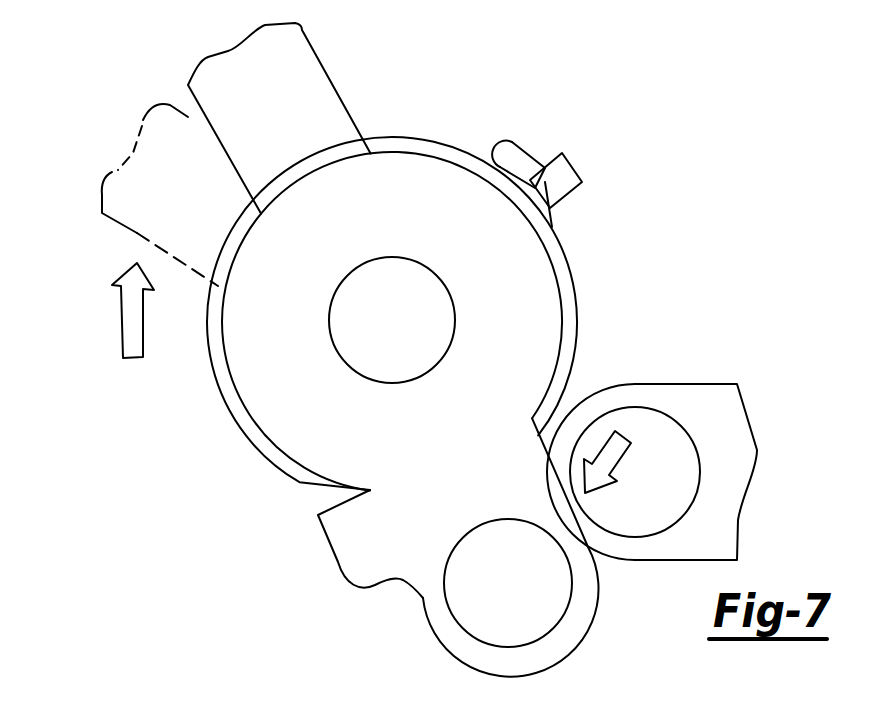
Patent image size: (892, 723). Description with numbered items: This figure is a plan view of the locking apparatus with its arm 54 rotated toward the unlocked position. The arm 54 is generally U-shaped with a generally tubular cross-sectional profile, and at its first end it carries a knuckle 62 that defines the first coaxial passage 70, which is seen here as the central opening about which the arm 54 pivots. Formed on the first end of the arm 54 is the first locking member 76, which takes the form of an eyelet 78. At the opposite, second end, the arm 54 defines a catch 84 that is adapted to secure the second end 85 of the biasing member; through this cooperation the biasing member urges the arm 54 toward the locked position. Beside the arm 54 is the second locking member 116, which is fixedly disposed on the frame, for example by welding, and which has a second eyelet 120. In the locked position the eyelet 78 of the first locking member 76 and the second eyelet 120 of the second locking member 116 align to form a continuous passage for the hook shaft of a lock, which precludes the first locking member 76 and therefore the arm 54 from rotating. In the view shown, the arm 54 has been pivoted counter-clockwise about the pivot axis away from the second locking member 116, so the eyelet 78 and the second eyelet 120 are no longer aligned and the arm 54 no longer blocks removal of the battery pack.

The arm 54 is at (306, 66).
The knuckle 62 is at (392, 547).
The first coaxial passage 70 is at (373, 328).
The first locking member 76 is at (505, 582).
The eyelet 78 is at (583, 615).
The catch 84 is at (526, 142).
The second end of the biasing member 85 is at (495, 153).
The second locking member 116 is at (705, 400).
The second eyelet 120 is at (641, 484).